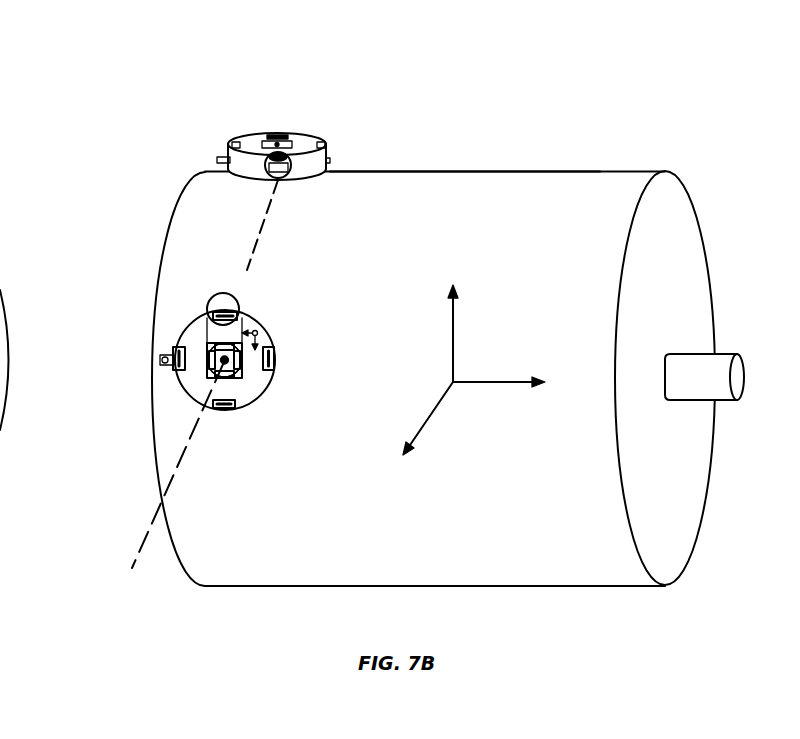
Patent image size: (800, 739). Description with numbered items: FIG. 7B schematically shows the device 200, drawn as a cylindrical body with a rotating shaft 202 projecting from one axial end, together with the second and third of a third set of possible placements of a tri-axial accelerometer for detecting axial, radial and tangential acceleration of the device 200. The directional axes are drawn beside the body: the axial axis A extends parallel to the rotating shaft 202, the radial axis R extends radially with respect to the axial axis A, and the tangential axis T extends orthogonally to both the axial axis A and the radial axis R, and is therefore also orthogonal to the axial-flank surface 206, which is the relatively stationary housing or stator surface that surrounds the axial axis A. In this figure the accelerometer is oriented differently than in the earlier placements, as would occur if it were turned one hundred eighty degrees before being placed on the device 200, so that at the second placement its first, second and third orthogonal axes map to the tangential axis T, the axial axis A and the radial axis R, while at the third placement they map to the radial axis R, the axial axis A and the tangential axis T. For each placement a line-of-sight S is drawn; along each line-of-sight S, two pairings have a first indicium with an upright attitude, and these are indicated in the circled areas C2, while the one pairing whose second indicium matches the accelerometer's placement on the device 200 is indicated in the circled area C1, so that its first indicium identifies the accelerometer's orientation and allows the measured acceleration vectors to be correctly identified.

The device 200 is at (617, 166).
The rotating shaft 202 is at (722, 360).
The axial-flank surface 206 is at (442, 172).
The circled area C1 is at (266, 167).
The circled areas C2 is at (278, 183).
The line-of-sight S is at (255, 255).
The radial axis R is at (462, 322).
The axial axis A is at (511, 383).
The tangential axis T is at (418, 428).